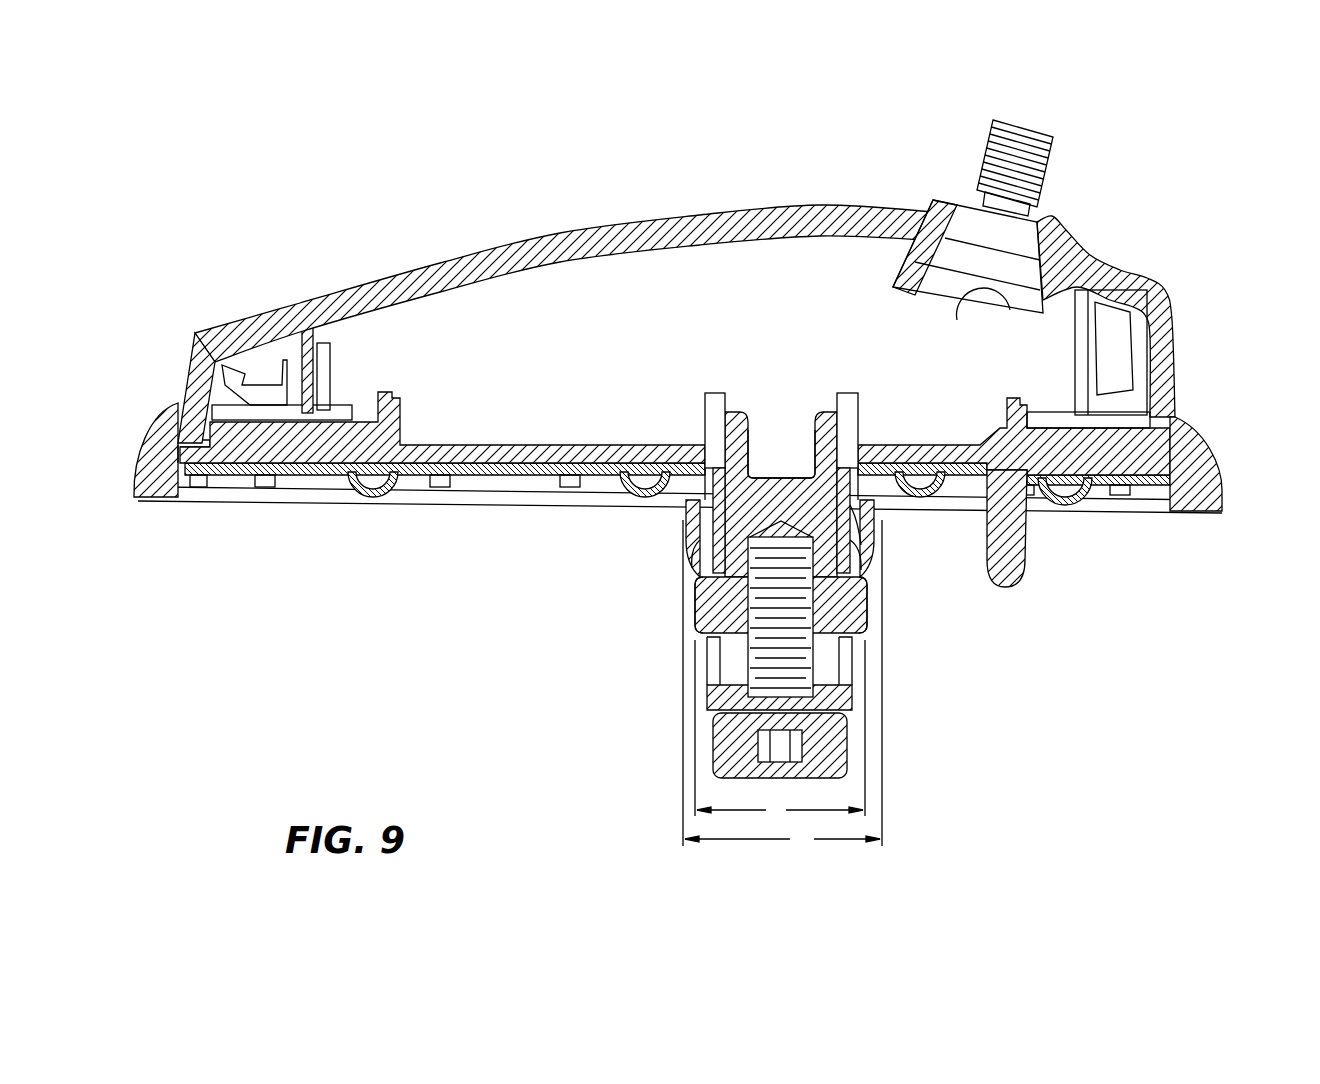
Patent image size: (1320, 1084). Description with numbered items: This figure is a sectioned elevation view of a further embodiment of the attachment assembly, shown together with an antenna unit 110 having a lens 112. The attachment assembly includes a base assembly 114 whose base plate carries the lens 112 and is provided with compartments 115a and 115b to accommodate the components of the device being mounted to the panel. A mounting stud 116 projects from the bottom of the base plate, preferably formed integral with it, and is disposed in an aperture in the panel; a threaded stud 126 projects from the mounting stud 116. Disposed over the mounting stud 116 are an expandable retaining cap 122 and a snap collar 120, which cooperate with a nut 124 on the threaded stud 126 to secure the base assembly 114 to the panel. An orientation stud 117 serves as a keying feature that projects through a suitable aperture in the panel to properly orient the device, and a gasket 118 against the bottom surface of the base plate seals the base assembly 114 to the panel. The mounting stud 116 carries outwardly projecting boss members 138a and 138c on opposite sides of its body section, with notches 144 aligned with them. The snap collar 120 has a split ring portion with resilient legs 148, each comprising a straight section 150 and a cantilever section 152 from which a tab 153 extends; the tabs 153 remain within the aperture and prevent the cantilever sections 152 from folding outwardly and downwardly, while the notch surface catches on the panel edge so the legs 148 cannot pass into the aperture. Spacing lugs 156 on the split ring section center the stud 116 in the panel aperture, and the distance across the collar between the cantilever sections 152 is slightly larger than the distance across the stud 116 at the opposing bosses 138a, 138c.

The antenna unit 110 is at (695, 490).
The lens 112 is at (478, 247).
The base assembly 114 is at (366, 413).
The compartment 115a is at (485, 445).
The compartment 115b is at (933, 455).
The mounting stud 116 is at (692, 595).
The orientation stud 117 is at (1025, 543).
The gasket 118 is at (1215, 440).
The snap collar 120 is at (760, 500).
The retaining cap 122 is at (698, 693).
The nut 124 is at (838, 745).
The threaded stud 126 is at (808, 672).
The boss member 138a is at (858, 608).
The boss member 138c is at (712, 617).
The notches 144 is at (770, 490).
The resilient legs 148 is at (690, 543).
The straight section 150 is at (870, 552).
The cantilever section 152 is at (873, 522).
The tab 153 is at (848, 513).
The spacing lugs 156 is at (706, 447).